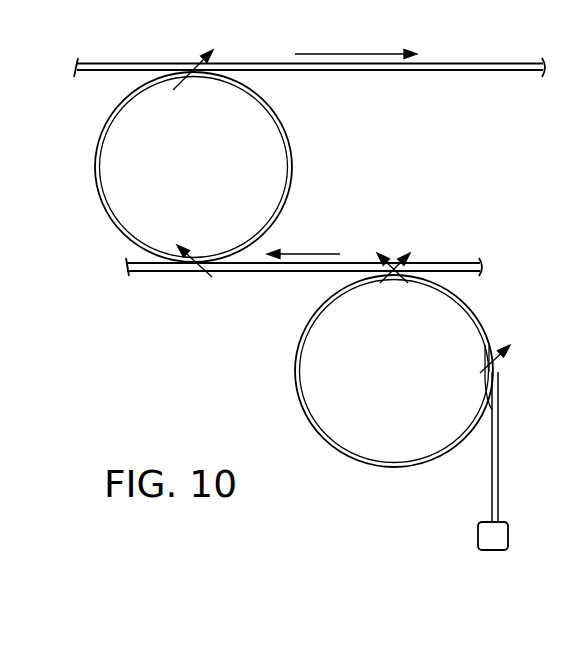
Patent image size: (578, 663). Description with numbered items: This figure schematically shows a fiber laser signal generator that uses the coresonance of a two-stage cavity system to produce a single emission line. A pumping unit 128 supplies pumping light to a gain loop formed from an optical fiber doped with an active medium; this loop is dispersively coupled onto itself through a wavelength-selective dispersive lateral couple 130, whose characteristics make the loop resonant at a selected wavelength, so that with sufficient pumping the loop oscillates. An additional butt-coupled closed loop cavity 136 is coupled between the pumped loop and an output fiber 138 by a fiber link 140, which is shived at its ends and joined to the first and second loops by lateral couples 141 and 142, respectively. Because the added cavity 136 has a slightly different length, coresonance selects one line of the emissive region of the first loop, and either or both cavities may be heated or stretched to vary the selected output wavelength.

The output fiber 138 is at (428, 63).
The closed loop cavity 136 is at (291, 139).
The fiber link 140 is at (292, 272).
The lateral couple 141 is at (185, 272).
The lateral couple 142 is at (392, 278).
The dispersive lateral couple 130 is at (493, 366).
The pumping unit 128 is at (478, 533).